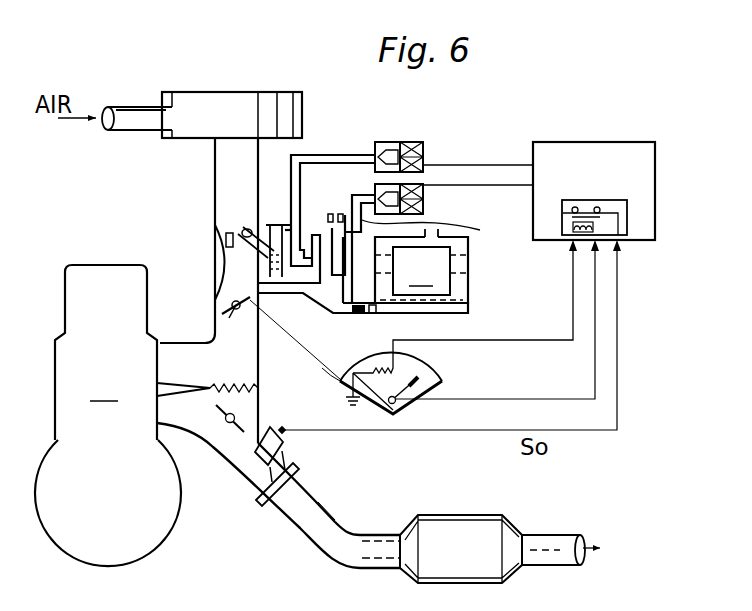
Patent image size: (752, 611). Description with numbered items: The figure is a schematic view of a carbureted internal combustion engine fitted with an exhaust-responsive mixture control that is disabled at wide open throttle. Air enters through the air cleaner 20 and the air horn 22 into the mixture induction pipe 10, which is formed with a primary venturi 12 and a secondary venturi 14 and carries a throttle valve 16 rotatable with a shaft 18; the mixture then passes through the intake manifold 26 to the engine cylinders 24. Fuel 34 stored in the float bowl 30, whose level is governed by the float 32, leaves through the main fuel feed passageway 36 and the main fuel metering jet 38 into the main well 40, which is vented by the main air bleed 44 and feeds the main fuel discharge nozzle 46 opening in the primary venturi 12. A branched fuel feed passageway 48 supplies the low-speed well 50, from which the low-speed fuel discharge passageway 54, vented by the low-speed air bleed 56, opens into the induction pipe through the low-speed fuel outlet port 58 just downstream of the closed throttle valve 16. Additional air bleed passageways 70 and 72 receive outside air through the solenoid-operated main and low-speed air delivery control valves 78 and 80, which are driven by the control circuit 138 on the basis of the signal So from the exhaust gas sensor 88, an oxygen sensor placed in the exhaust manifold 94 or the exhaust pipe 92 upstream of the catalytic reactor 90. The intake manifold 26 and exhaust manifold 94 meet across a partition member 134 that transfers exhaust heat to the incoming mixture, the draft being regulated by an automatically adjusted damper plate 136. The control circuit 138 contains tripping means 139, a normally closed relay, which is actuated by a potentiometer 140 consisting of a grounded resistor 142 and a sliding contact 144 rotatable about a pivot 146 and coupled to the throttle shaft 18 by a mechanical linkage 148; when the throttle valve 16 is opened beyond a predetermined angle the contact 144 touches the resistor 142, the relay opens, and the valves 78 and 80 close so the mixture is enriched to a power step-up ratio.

The mixture induction pipe 10 is at (214, 288).
The primary venturi 12 is at (228, 238).
The secondary venturi 14 is at (233, 280).
The throttle valve 16 is at (229, 318).
The shaft 18 is at (238, 312).
The air cleaner 20 is at (243, 92).
The air horn 22 is at (213, 178).
The engine cylinders 24 is at (108, 415).
The intake manifold 26 is at (172, 342).
The float bowl 30 is at (470, 292).
The float 32 is at (421, 271).
The fuel 34 is at (453, 305).
The main fuel feed passageway 36 is at (356, 316).
The main fuel metering jet 38 is at (372, 315).
The main well 40 is at (273, 284).
The main air bleed 44 is at (276, 225).
The main fuel discharge nozzle 46 is at (247, 230).
The fuel feed passageway 48 is at (310, 240).
The low-speed well 50 is at (350, 240).
The low-speed fuel discharge passageway 54 is at (300, 296).
The low-speed air bleed 56 is at (340, 212).
The low-speed fuel outlet port 58 is at (258, 322).
The additional air bleed passageway 70 is at (375, 150).
The additional air bleed passageway 72 is at (436, 233).
The main air delivery control valve 78 is at (420, 135).
The low-speed air delivery control valve 80 is at (425, 199).
The exhaust gas sensor 88 is at (255, 455).
The catalytic reactor 90 is at (467, 515).
The exhaust pipe 92 is at (367, 535).
The exhaust manifold 94 is at (212, 445).
The partition member 134 is at (258, 388).
The damper plate 136 is at (243, 423).
The control circuit 138 is at (618, 142).
The tripping means 139 is at (622, 218).
The potentiometer 140 is at (436, 372).
The resistor 142 is at (398, 358).
The sliding contact 144 is at (416, 384).
The pivot 146 is at (390, 414).
The mechanical linkage 148 is at (322, 368).